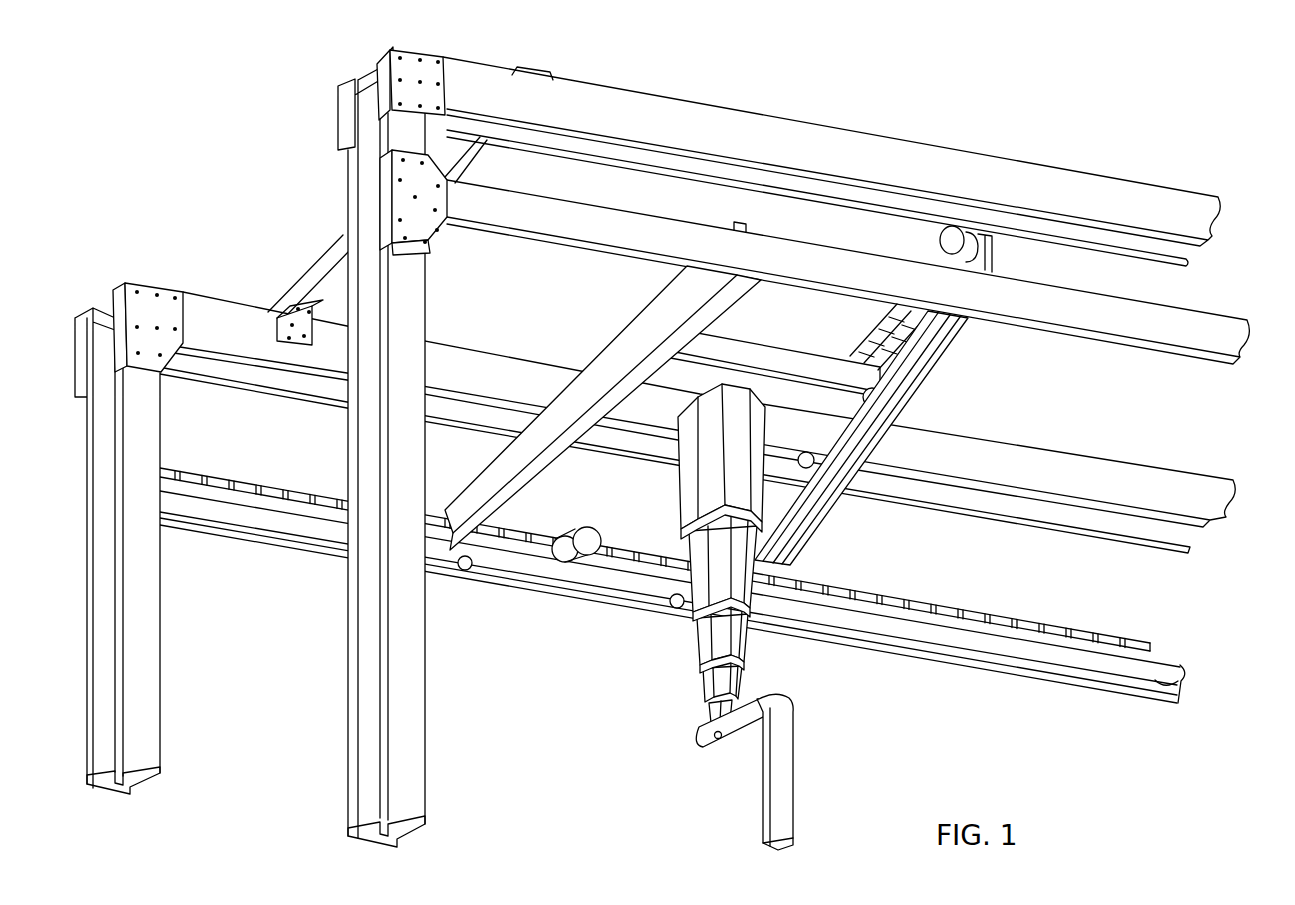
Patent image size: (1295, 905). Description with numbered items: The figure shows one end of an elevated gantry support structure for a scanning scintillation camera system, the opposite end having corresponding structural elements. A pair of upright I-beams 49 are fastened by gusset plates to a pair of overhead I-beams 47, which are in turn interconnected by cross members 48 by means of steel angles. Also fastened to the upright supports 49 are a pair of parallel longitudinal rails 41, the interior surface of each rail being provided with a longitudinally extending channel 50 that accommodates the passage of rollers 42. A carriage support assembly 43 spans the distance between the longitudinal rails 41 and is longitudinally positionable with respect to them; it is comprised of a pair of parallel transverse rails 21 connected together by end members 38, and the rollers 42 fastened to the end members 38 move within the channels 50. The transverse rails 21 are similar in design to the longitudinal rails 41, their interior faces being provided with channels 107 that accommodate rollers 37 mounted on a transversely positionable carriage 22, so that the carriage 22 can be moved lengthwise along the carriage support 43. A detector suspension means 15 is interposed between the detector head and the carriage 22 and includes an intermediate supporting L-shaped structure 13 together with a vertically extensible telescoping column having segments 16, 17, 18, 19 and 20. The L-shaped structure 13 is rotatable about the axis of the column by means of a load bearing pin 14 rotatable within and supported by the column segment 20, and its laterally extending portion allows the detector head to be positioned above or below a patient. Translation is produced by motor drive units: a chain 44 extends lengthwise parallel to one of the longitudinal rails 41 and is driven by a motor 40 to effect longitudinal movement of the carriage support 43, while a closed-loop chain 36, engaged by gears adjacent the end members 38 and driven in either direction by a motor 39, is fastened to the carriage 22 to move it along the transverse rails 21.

The L-shaped structure 13 is at (795, 772).
The load bearing pin 14 is at (717, 745).
The detector suspension means 15 is at (695, 590).
The column segment 16 is at (688, 490).
The column segment 17 is at (690, 558).
The column segment 18 is at (702, 643).
The column segment 19 is at (737, 680).
The column segment 20 is at (699, 731).
The transverse rails 21 is at (630, 352).
The carriage 22 is at (722, 330).
The chain 36 is at (882, 325).
The rollers 37 is at (880, 404).
The end members 38 is at (770, 231).
The motor 39 is at (975, 248).
The motor 40 is at (590, 533).
The longitudinal rails 41 is at (1197, 325).
The rollers 42 is at (465, 565).
The carriage support assembly 43 is at (625, 292).
The chain 44 is at (975, 613).
The overhead I-beams 47 is at (641, 114).
The cross members 48 is at (325, 250).
The upright I-beams 49 is at (348, 682).
The channel 50 is at (1180, 682).
The channels 107 is at (930, 347).